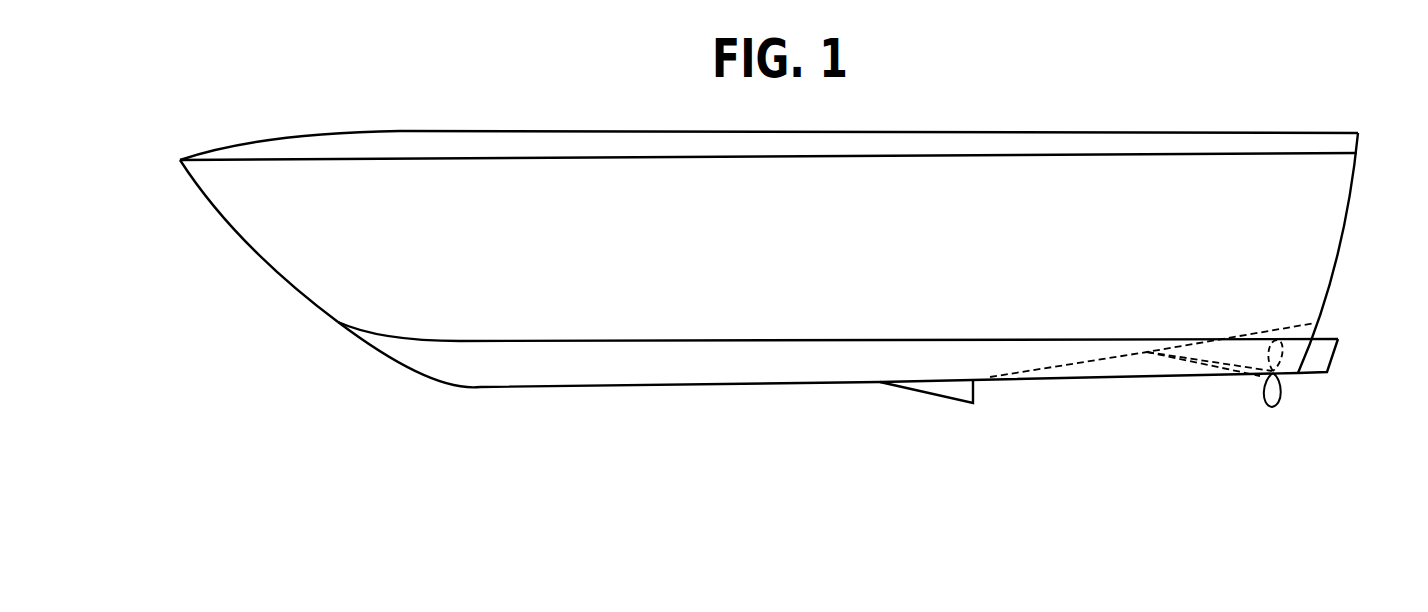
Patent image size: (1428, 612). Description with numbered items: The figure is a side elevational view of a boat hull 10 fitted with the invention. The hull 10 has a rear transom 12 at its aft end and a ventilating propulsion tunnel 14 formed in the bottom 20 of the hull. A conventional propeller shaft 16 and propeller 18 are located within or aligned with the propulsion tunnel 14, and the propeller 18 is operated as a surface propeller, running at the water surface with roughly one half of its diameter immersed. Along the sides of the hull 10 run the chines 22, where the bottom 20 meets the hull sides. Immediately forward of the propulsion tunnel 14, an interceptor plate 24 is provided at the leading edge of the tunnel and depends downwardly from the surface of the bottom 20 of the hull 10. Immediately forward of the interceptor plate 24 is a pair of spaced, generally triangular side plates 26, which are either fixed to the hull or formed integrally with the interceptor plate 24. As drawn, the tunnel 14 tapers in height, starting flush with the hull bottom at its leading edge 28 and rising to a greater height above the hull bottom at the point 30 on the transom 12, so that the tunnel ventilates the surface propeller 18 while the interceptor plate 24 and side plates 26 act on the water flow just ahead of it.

The boat hull 10 is at (268, 233).
The rear transom 12 is at (1335, 260).
The ventilating propulsion tunnel 14 is at (1060, 365).
The propeller shaft 16 is at (1197, 363).
The propeller 18 is at (1270, 407).
The bottom of the hull 20 is at (687, 363).
The chines 22 is at (490, 342).
The interceptor plate 24 is at (975, 381).
The side plates 26 is at (912, 390).
The leading edge 28 is at (975, 381).
The point on transom 30 is at (1315, 327).